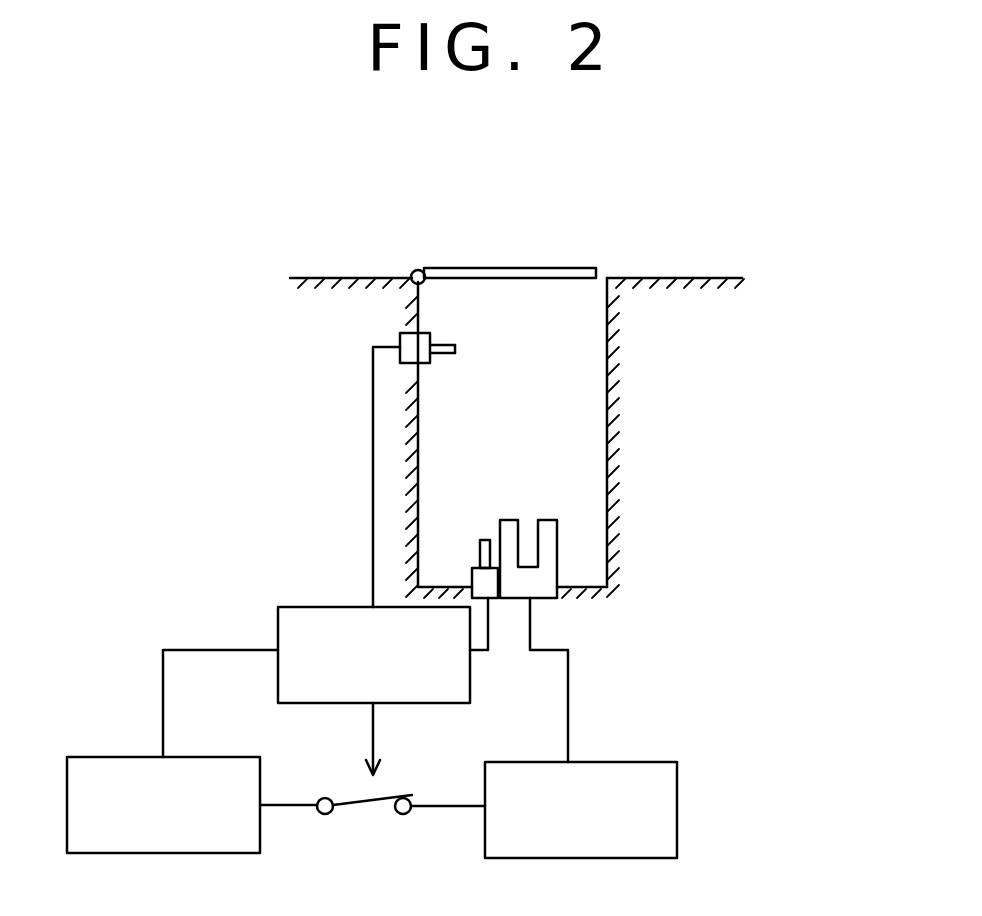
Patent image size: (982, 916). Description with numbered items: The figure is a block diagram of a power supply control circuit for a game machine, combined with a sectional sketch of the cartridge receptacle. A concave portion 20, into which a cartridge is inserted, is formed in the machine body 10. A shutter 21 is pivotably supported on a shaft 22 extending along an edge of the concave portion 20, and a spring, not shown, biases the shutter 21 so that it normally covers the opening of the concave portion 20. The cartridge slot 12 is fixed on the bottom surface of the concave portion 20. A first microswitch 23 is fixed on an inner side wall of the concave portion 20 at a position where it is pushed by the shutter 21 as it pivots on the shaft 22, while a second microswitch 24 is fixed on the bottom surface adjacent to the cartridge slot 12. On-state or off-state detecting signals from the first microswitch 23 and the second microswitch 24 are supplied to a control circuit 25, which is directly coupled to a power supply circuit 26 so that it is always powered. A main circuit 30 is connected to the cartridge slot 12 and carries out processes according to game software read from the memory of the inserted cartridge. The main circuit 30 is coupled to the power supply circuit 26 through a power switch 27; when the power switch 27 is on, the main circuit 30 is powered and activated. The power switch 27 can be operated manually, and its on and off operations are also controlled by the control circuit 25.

The machine body 10 is at (675, 278).
The concave portion 20 is at (592, 373).
The shutter 21 is at (515, 268).
The shaft 22 is at (415, 268).
The first microswitch 23 is at (398, 335).
The second microswitch 24 is at (472, 578).
The cartridge slot 12 is at (553, 520).
The control circuit 25 is at (323, 607).
The power supply circuit 26 is at (212, 757).
The power switch 27 is at (366, 808).
The main circuit 30 is at (632, 762).